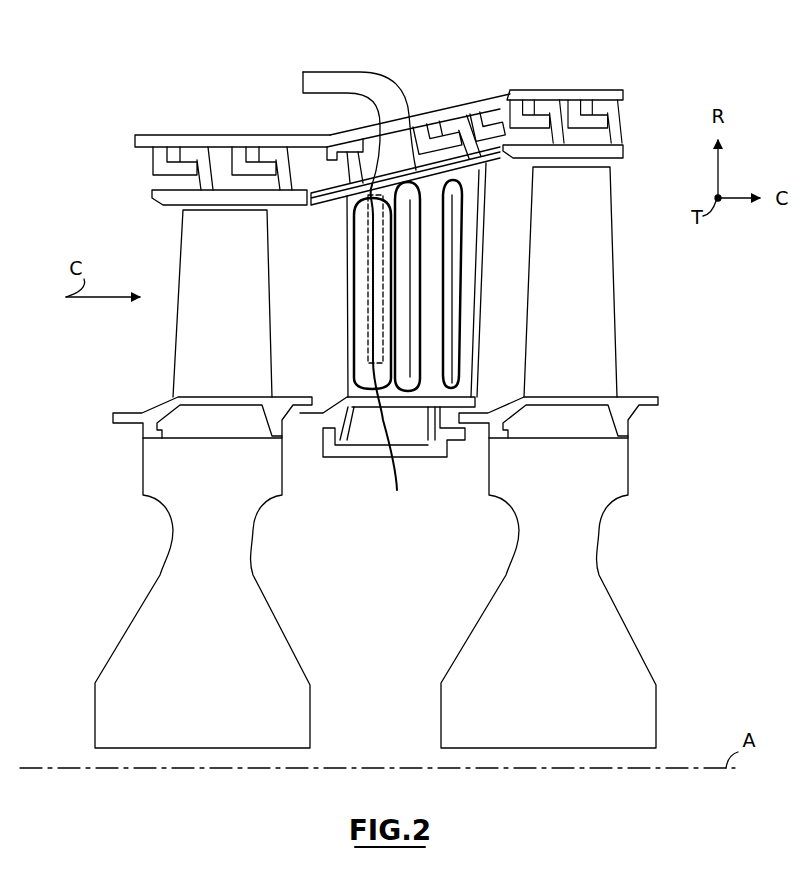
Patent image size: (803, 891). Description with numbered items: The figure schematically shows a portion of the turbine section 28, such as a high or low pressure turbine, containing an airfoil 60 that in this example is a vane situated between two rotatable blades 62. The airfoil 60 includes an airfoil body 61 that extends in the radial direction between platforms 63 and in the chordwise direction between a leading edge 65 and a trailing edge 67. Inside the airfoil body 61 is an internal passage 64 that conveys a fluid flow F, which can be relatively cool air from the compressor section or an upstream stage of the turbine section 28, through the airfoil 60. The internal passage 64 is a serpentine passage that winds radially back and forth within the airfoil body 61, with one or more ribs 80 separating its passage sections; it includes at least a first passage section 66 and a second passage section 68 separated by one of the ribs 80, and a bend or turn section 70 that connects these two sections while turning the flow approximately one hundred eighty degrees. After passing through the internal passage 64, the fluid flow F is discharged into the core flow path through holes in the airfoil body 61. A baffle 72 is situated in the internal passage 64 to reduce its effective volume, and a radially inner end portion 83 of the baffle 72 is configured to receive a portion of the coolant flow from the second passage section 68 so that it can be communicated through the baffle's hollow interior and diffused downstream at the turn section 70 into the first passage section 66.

The turbine section 28 is at (72, 75).
The airfoil 60 is at (341, 294).
The airfoil body 61 is at (343, 263).
The rotatable blades 62 is at (170, 332).
The platforms 63 is at (506, 176).
The internal passage 64 is at (438, 185).
The leading edge 65 is at (345, 360).
The first passage section 66 is at (348, 223).
The trailing edge 67 is at (458, 315).
The second passage section 68 is at (362, 331).
The turn section 70 is at (346, 150).
The baffle 72 is at (396, 185).
The ribs 80 is at (430, 228).
The radially inner end portion 83 is at (408, 421).
The fluid flow F is at (395, 472).